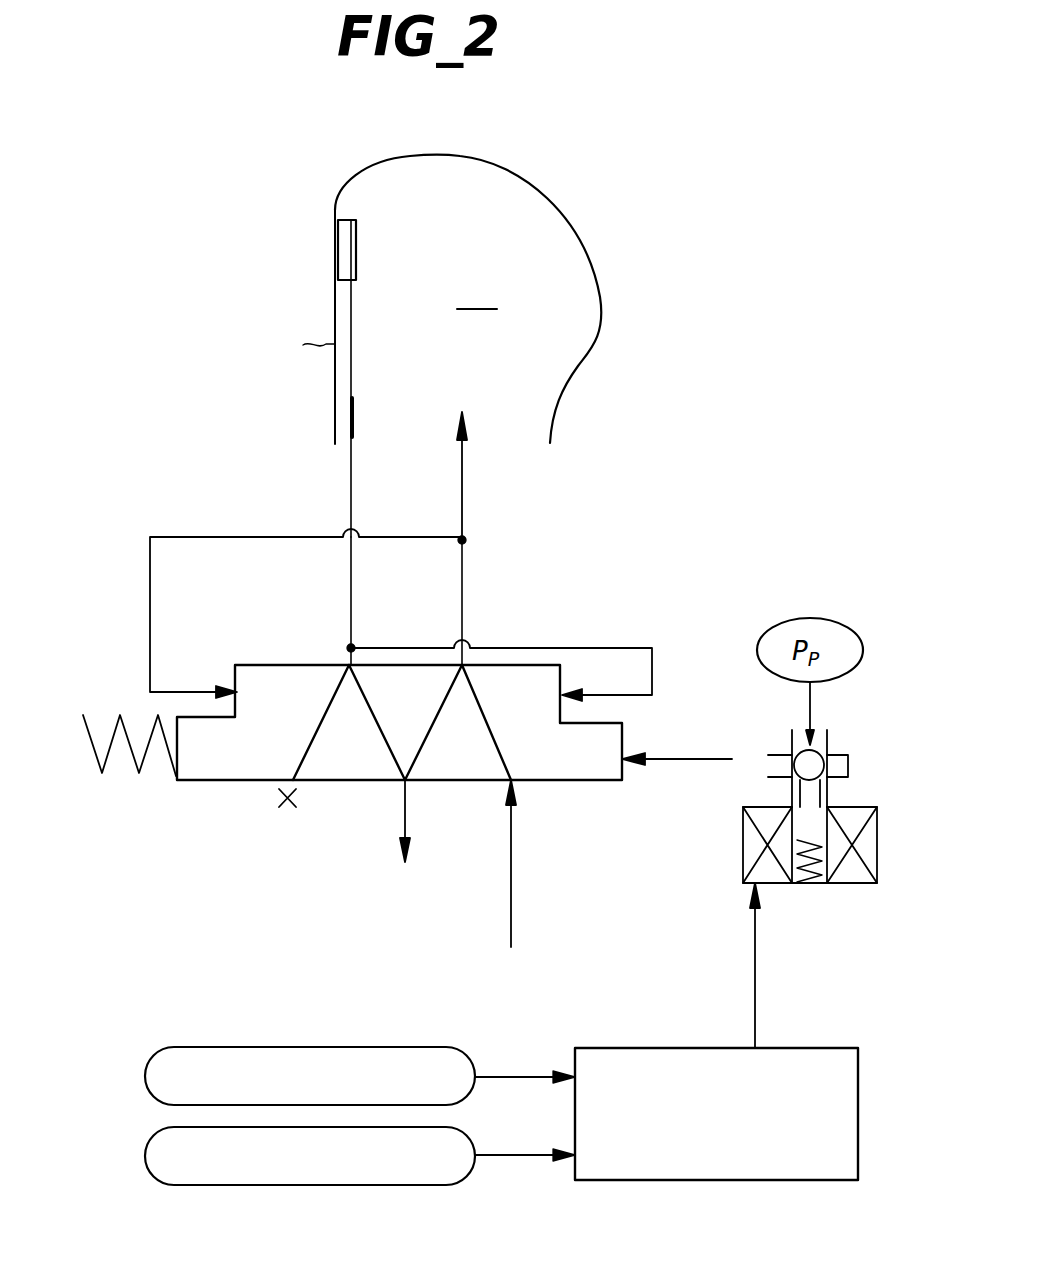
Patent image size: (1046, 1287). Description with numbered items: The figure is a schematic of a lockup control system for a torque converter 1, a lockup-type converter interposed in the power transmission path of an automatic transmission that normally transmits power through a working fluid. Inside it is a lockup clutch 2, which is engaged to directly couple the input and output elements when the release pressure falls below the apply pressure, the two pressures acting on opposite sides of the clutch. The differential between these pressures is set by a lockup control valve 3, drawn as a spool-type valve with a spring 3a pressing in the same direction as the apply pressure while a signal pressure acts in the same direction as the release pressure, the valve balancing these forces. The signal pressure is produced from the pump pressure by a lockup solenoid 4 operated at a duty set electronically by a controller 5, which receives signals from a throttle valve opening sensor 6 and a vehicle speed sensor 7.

The torque converter 1 is at (596, 248).
The lockup clutch 2 is at (357, 290).
The lockup control valve 3 is at (212, 780).
The spring 3a is at (95, 752).
The lockup solenoid 4 is at (845, 885).
The controller 5 is at (858, 1120).
The throttle valve opening sensor 6 is at (145, 1077).
The vehicle speed sensor 7 is at (145, 1157).